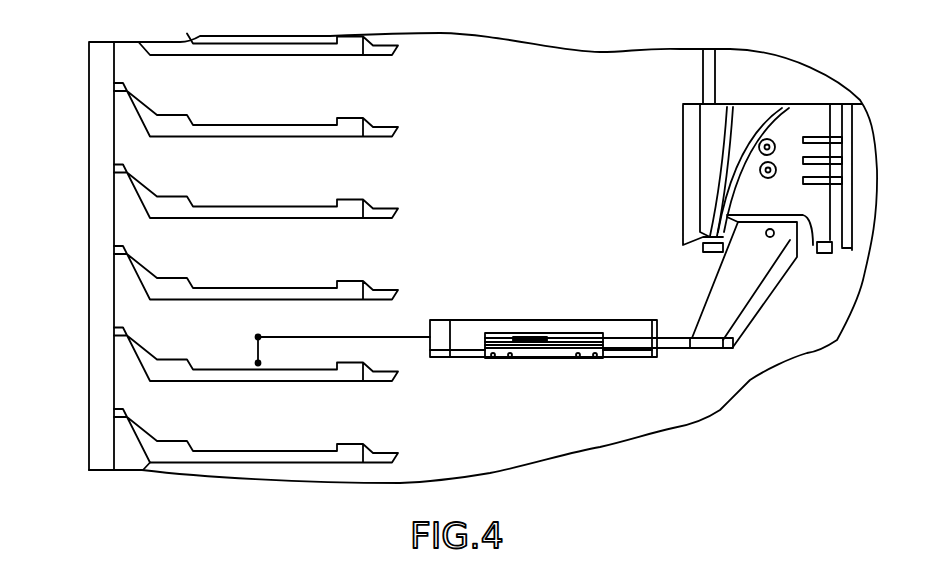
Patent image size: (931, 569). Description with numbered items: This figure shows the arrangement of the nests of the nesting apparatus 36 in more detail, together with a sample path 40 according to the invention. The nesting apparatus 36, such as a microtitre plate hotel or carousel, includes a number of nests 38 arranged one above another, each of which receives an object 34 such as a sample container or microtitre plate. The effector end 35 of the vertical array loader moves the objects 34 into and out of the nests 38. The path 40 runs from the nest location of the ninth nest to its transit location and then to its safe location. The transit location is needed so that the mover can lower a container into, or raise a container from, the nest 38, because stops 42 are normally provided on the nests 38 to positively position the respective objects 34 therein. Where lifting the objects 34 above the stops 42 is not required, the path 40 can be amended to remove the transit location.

The object 34 is at (485, 320).
The effector end 35 is at (807, 271).
The nesting apparatus 36 is at (88, 172).
The nest 38 is at (372, 93).
The sample path 40 is at (388, 338).
The stop 42 is at (347, 443).